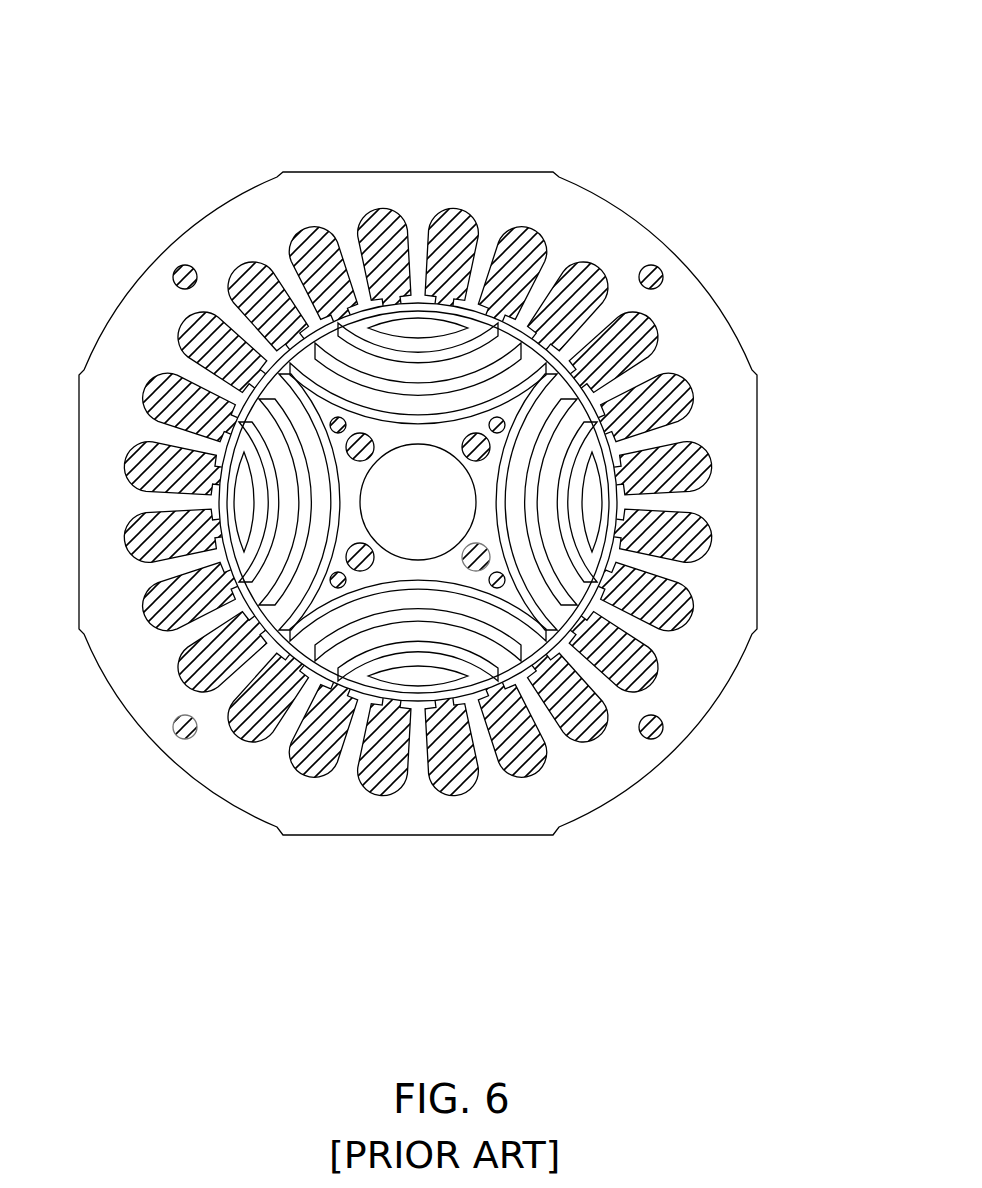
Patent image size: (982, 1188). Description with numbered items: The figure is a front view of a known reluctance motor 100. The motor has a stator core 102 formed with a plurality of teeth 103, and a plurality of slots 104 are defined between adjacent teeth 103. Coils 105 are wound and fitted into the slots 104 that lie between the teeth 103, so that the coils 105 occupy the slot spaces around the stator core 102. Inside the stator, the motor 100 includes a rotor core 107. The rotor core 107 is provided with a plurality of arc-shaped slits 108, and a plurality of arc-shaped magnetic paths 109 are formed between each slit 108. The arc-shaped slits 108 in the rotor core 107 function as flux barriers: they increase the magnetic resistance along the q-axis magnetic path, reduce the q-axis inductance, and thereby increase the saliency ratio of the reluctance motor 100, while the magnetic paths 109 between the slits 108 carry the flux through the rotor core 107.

The reluctance motor 100 is at (469, 477).
The stator core 102 is at (431, 168).
The teeth 103 is at (672, 503).
The slots 104 is at (718, 467).
The coils 105 is at (705, 532).
The rotor core 107 is at (355, 683).
The arc-shaped slits 108 is at (437, 617).
The arc-shaped magnetic paths 109 is at (467, 640).